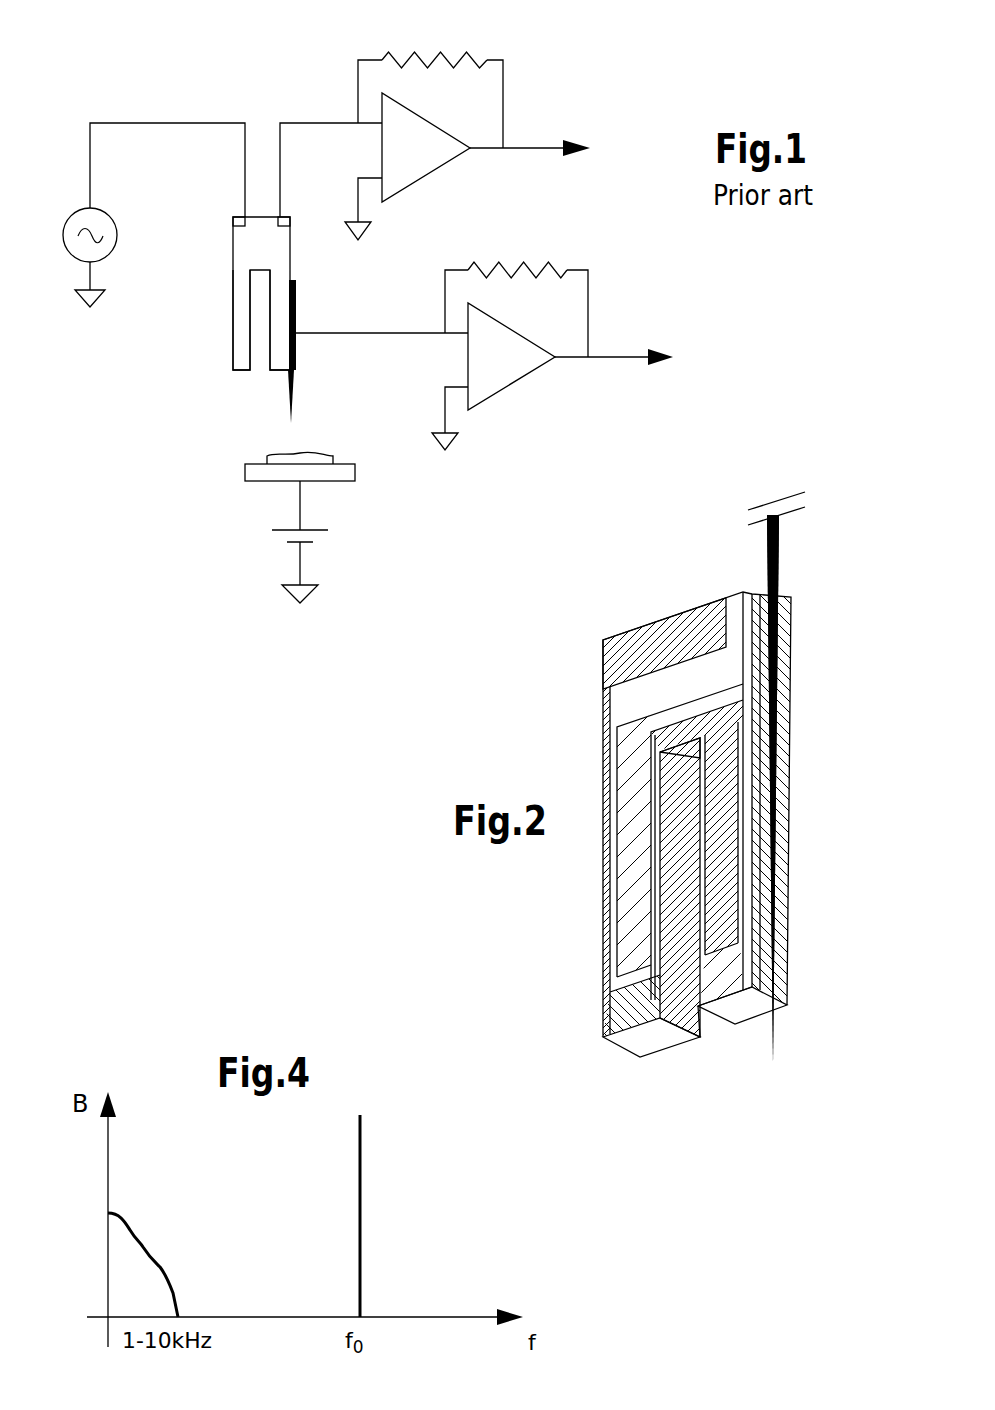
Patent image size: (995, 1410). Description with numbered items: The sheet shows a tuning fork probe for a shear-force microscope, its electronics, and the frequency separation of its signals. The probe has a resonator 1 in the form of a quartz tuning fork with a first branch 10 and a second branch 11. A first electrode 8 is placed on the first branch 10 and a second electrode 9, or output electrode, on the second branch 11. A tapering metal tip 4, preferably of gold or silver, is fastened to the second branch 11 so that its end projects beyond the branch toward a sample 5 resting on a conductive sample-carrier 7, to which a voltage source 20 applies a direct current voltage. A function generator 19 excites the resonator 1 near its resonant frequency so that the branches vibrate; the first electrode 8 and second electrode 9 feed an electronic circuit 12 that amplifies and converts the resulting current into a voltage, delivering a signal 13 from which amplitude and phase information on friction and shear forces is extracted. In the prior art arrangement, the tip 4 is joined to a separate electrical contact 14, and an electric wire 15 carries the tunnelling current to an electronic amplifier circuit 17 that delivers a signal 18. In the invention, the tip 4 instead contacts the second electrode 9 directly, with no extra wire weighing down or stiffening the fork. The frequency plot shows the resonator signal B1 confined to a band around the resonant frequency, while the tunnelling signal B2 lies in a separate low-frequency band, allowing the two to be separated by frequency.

In FIG. 1, the resonator 1 is at (247, 255).
In FIG. 2, the resonator 1 is at (622, 708).
In FIG. 1, the tip 4 is at (294, 378).
In FIG. 2, the tip 4 is at (777, 1023).
In FIG. 1, the sample 5 is at (280, 452).
In FIG. 1, the sample-carrier 7 is at (352, 472).
In FIG. 1, the first electrode 8 is at (233, 224).
In FIG. 2, the first electrode 8 is at (653, 640).
In FIG. 1, the second electrode 9 is at (290, 223).
In FIG. 2, the second electrode 9 is at (787, 645).
In FIG. 1, the first branch 10 is at (240, 295).
In FIG. 2, the first branch 10 is at (663, 1037).
In FIG. 1, the second branch 11 is at (278, 360).
In FIG. 2, the second branch 11 is at (743, 1010).
In FIG. 1, the electronic circuit 12 is at (430, 160).
In FIG. 1, the signal 13 is at (577, 140).
In FIG. 1, the electrical contact 14 is at (293, 305).
In FIG. 1, the electric wire 15 is at (380, 333).
In FIG. 1, the electronic amplifier circuit 17 is at (510, 362).
In FIG. 1, the signal 18 is at (665, 350).
In FIG. 1, the function generator 19 is at (88, 210).
In FIG. 1, the voltage source 20 is at (280, 530).
In FIG. 4, the signal representative of the oscillations of the vibrating probe B1 is at (362, 1213).
In FIG. 4, the low frequency signal band B2 is at (150, 1250).